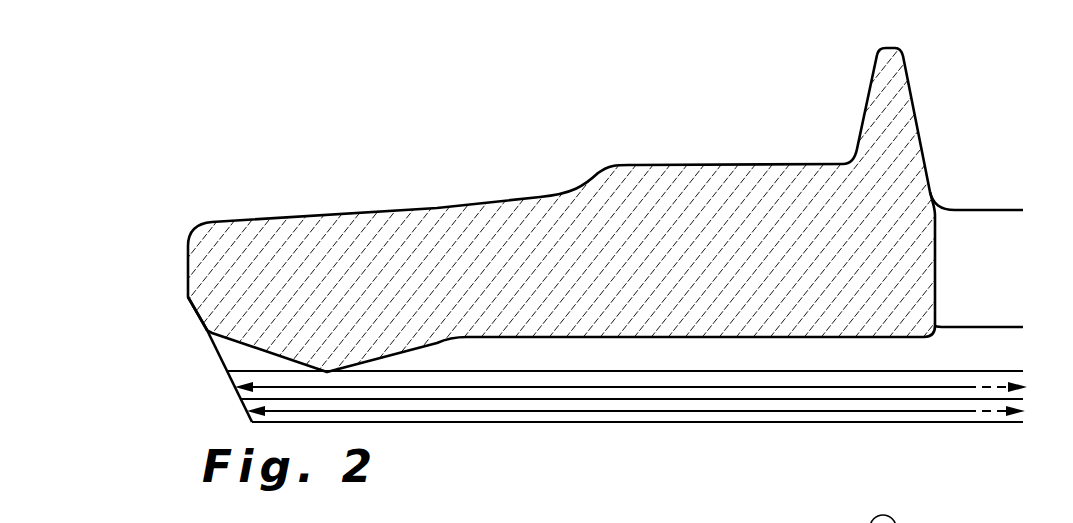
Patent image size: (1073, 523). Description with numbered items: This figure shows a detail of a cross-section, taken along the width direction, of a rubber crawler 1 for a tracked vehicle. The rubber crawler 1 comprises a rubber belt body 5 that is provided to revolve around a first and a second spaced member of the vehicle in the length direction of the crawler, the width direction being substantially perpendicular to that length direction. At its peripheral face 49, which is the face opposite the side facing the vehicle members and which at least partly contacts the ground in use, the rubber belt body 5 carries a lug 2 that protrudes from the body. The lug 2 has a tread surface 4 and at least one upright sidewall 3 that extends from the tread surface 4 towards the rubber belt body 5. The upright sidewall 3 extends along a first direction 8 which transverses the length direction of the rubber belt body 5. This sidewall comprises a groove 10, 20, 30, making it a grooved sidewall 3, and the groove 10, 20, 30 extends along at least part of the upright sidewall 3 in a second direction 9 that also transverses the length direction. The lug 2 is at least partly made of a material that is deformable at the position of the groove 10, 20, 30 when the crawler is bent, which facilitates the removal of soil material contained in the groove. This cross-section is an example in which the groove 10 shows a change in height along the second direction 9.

The rubber crawler 1 is at (989, 121).
The lug 2 is at (227, 378).
The upright sidewall 3 is at (185, 374).
The tread surface 4 is at (603, 422).
The rubber belt body 5 is at (704, 254).
The first direction 8 is at (940, 386).
The second direction 9 is at (960, 410).
The groove 10 is at (852, 403).
The groove 20 is at (807, 380).
The groove 30 is at (757, 350).
The peripheral face 49 is at (468, 448).